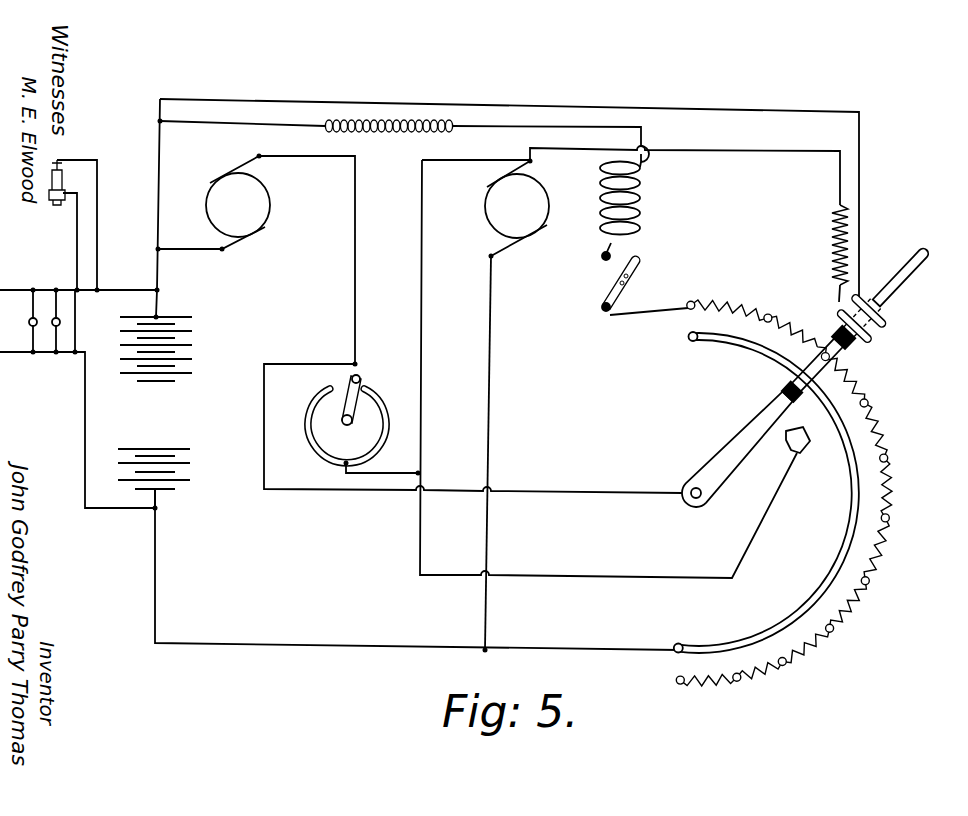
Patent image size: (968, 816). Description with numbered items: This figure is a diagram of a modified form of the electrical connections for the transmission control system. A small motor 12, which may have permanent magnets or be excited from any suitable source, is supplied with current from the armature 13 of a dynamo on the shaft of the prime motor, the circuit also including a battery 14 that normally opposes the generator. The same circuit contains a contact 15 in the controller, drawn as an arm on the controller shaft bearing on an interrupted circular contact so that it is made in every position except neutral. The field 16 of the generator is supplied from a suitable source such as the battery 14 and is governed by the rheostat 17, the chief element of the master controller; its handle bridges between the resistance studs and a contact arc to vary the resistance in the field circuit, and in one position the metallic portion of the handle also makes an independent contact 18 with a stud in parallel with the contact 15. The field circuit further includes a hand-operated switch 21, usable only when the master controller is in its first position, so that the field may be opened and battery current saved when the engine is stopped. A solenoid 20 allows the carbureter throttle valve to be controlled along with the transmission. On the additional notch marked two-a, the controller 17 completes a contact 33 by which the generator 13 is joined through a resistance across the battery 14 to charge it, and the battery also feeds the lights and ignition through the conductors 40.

The small motor 12 is at (238, 205).
The armature of dynamo 13 is at (517, 208).
The battery 14 is at (188, 440).
The contact 15 is at (347, 420).
The field 16 is at (642, 207).
The rheostat 17 is at (806, 496).
The independent contact 18 is at (805, 452).
The solenoid 20 is at (388, 141).
The switch 21 is at (617, 283).
The contact 33 is at (867, 330).
The conductors 40 is at (107, 296).